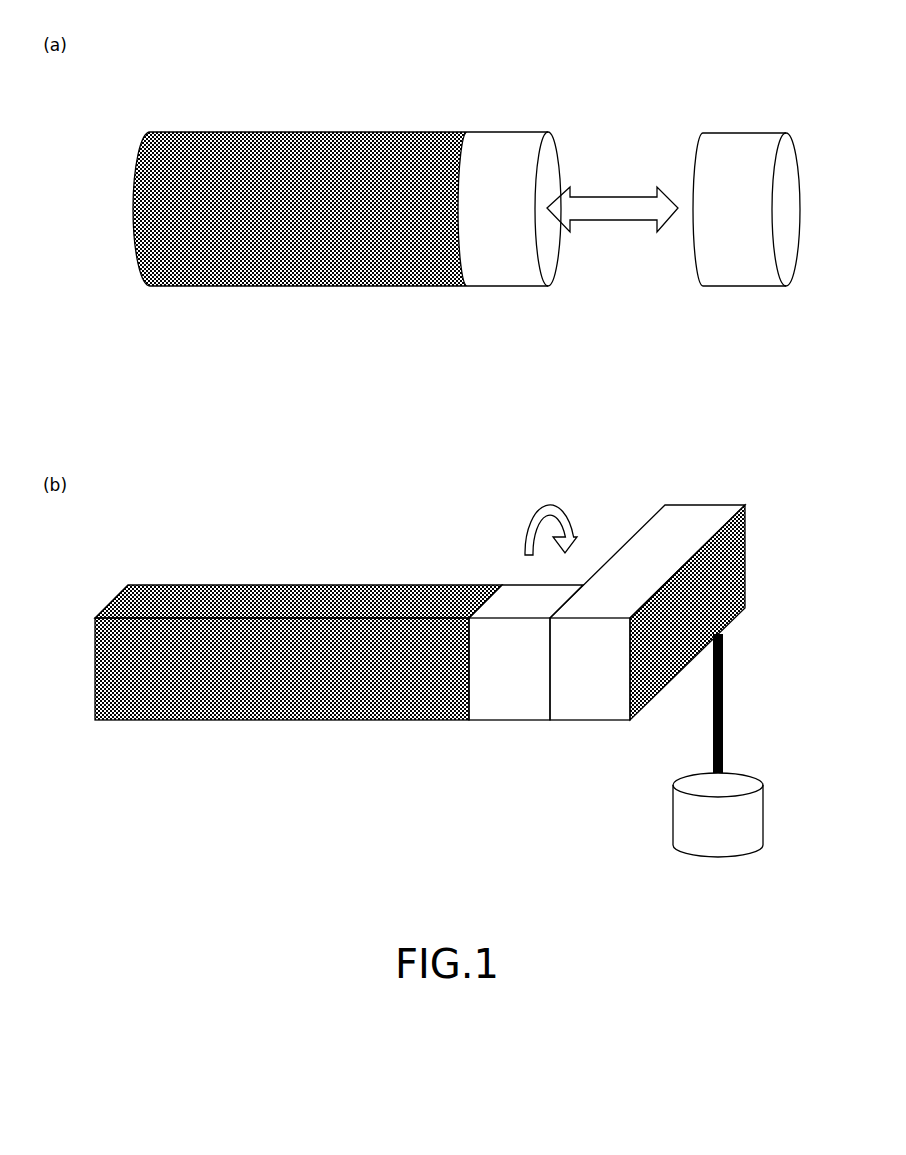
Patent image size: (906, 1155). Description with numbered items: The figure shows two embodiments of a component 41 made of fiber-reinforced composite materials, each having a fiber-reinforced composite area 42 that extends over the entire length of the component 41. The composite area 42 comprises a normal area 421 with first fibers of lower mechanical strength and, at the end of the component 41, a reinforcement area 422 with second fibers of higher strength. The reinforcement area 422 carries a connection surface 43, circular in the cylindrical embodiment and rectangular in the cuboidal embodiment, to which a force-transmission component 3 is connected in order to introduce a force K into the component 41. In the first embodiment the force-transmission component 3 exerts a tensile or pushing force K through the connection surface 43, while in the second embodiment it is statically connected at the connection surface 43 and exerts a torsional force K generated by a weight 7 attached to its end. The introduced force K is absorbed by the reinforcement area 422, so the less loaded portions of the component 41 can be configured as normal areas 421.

The component 41 is at (100, 182).
The fiber-reinforced composite area 42 is at (548, 130).
The normal area 421 is at (266, 226).
The reinforcement area 422 is at (467, 85).
The connection surface 43 is at (552, 249).
The force-transmission component 3 is at (730, 216).
The weight 7 is at (712, 841).
The force K is at (615, 192).